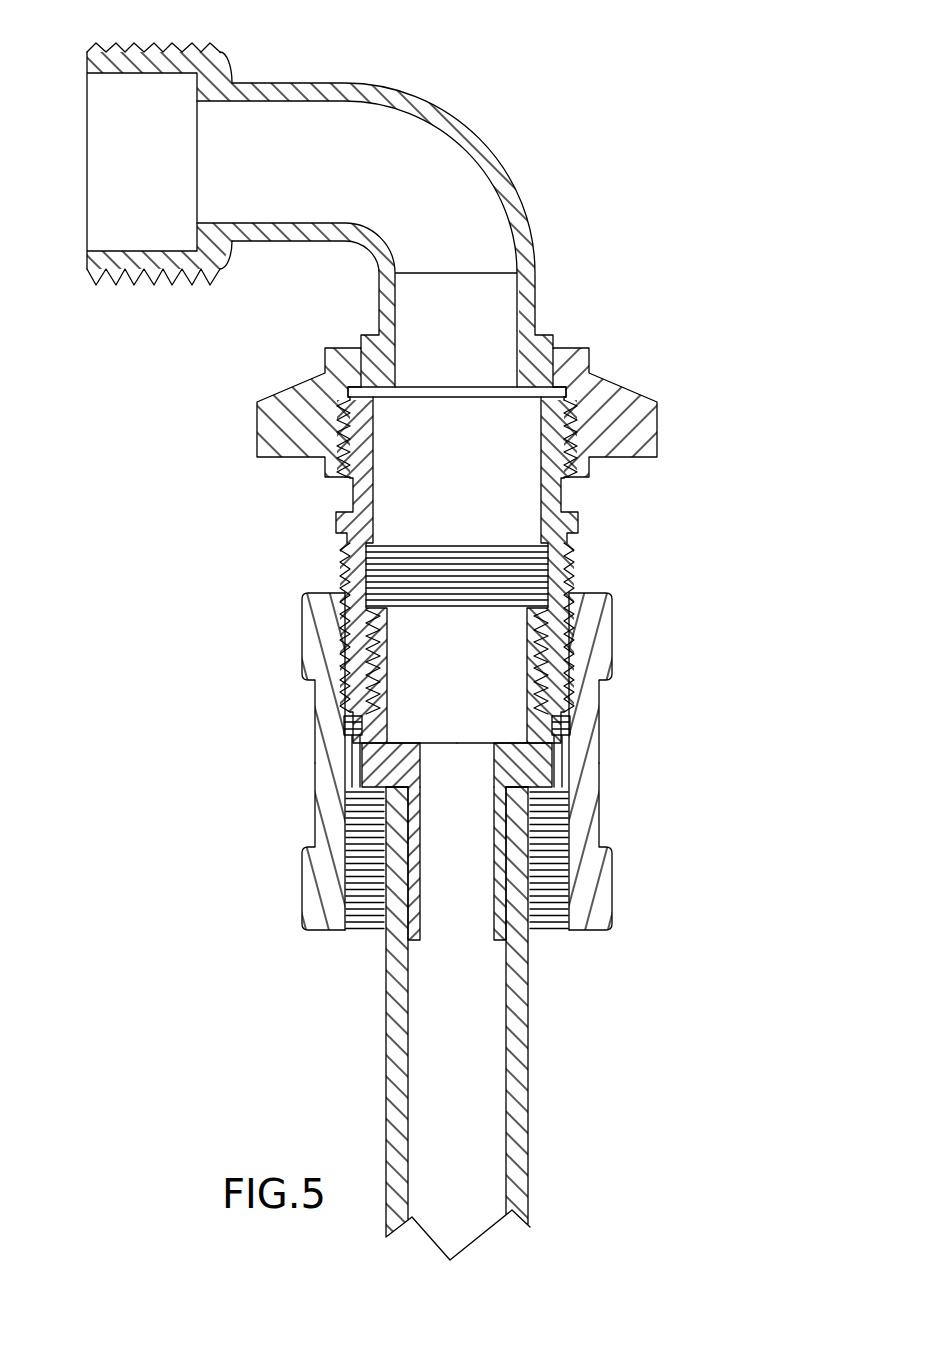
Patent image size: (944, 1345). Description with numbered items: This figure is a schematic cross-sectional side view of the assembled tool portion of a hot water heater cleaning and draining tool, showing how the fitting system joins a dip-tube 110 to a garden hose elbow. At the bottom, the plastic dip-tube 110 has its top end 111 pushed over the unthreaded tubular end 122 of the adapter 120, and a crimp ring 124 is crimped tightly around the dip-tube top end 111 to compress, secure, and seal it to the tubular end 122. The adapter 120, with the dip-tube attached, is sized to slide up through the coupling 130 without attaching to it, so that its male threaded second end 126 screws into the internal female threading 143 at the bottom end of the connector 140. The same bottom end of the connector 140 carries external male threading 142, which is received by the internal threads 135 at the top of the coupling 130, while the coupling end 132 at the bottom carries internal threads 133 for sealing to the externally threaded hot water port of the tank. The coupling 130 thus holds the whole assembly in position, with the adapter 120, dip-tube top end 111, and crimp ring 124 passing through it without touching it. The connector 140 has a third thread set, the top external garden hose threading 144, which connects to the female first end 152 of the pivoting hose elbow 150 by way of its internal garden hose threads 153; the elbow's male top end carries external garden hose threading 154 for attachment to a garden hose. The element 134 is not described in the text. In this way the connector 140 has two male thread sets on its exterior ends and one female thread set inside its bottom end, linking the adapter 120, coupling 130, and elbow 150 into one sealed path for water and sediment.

The dip-tube 110 is at (374, 1023).
The dip-tube top end 111 is at (397, 910).
The adapter 120 is at (464, 841).
The tubular end 122 is at (413, 867).
The crimp ring 124 is at (357, 823).
The male threaded second end 126 is at (350, 607).
The coupling 130 is at (453, 823).
The coupling end 132 is at (322, 917).
The internal threads 133 is at (553, 913).
The upper nut portion 134 is at (313, 652).
The internal threads 135 is at (347, 667).
The connector 140 is at (447, 570).
The external male threading 142 is at (350, 638).
The internal female threading 143 is at (547, 640).
The external male threading 144 is at (338, 458).
The hose elbow 150 is at (345, 215).
The female first end 152 is at (366, 430).
The internal garden hose threads 153 is at (563, 397).
The external garden hose threading 154 is at (142, 277).